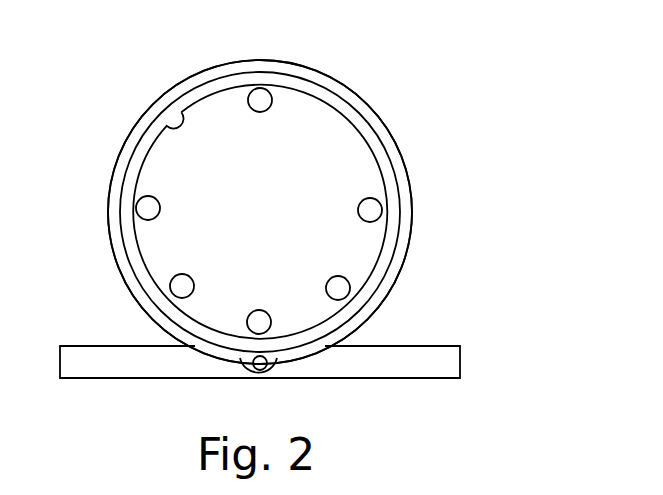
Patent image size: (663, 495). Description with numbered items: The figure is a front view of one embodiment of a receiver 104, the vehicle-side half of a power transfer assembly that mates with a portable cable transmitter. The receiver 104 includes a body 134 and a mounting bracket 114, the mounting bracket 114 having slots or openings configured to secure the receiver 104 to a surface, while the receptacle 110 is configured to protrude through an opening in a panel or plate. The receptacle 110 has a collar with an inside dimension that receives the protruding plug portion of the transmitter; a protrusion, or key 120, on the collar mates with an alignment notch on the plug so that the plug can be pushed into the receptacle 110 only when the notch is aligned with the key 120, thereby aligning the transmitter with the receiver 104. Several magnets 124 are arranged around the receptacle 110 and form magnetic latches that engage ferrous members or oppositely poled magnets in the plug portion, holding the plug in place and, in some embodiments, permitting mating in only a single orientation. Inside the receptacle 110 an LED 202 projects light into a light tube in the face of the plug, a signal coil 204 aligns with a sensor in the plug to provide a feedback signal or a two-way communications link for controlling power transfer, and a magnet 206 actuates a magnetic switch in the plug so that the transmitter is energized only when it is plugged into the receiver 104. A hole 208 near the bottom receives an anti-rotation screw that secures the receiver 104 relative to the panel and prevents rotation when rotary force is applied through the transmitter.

The receiver 104 is at (486, 113).
The receptacle 110 is at (263, 70).
The mounting bracket 114 is at (448, 346).
The key 120 is at (173, 129).
The magnets 124 is at (148, 197).
The body 134 is at (134, 130).
The LED 202 is at (338, 277).
The signal coil 204 is at (182, 275).
The magnet 206 is at (258, 310).
The hole 208 is at (268, 363).